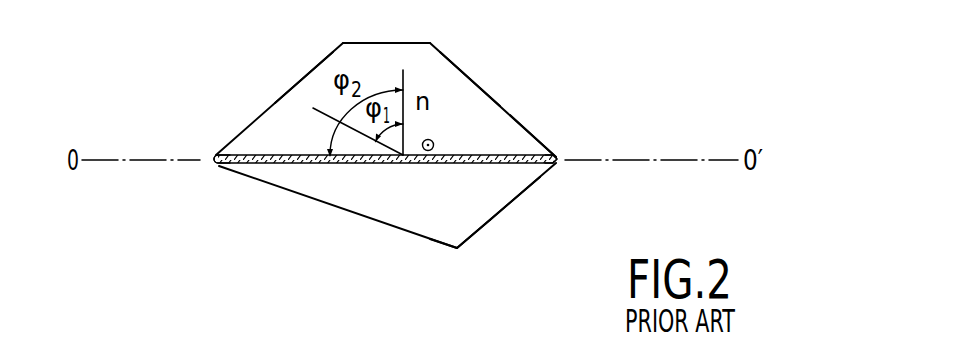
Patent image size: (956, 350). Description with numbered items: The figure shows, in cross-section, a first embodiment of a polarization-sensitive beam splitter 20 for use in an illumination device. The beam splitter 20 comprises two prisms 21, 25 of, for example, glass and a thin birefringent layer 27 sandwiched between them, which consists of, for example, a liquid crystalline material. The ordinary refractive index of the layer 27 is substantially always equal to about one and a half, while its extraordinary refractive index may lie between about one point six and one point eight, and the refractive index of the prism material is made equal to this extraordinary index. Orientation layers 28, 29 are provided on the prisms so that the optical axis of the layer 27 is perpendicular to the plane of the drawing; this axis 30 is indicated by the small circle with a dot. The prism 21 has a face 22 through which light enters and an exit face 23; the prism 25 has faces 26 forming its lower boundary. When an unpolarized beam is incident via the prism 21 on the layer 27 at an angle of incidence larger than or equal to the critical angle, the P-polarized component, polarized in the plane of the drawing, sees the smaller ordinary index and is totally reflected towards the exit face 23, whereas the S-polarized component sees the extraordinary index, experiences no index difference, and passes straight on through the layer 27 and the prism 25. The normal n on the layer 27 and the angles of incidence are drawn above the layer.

The beam splitter 20 is at (398, 29).
The prism 21 is at (457, 95).
The left upper prism face 22 is at (298, 83).
The exit face 23 is at (533, 138).
The prism 25 is at (505, 190).
The bottom edge of prism 26 is at (479, 231).
The birefringent layer 27 is at (544, 171).
The orientation layer 28 is at (226, 150).
The orientation layer 29 is at (227, 169).
The optical axis 30 is at (433, 141).